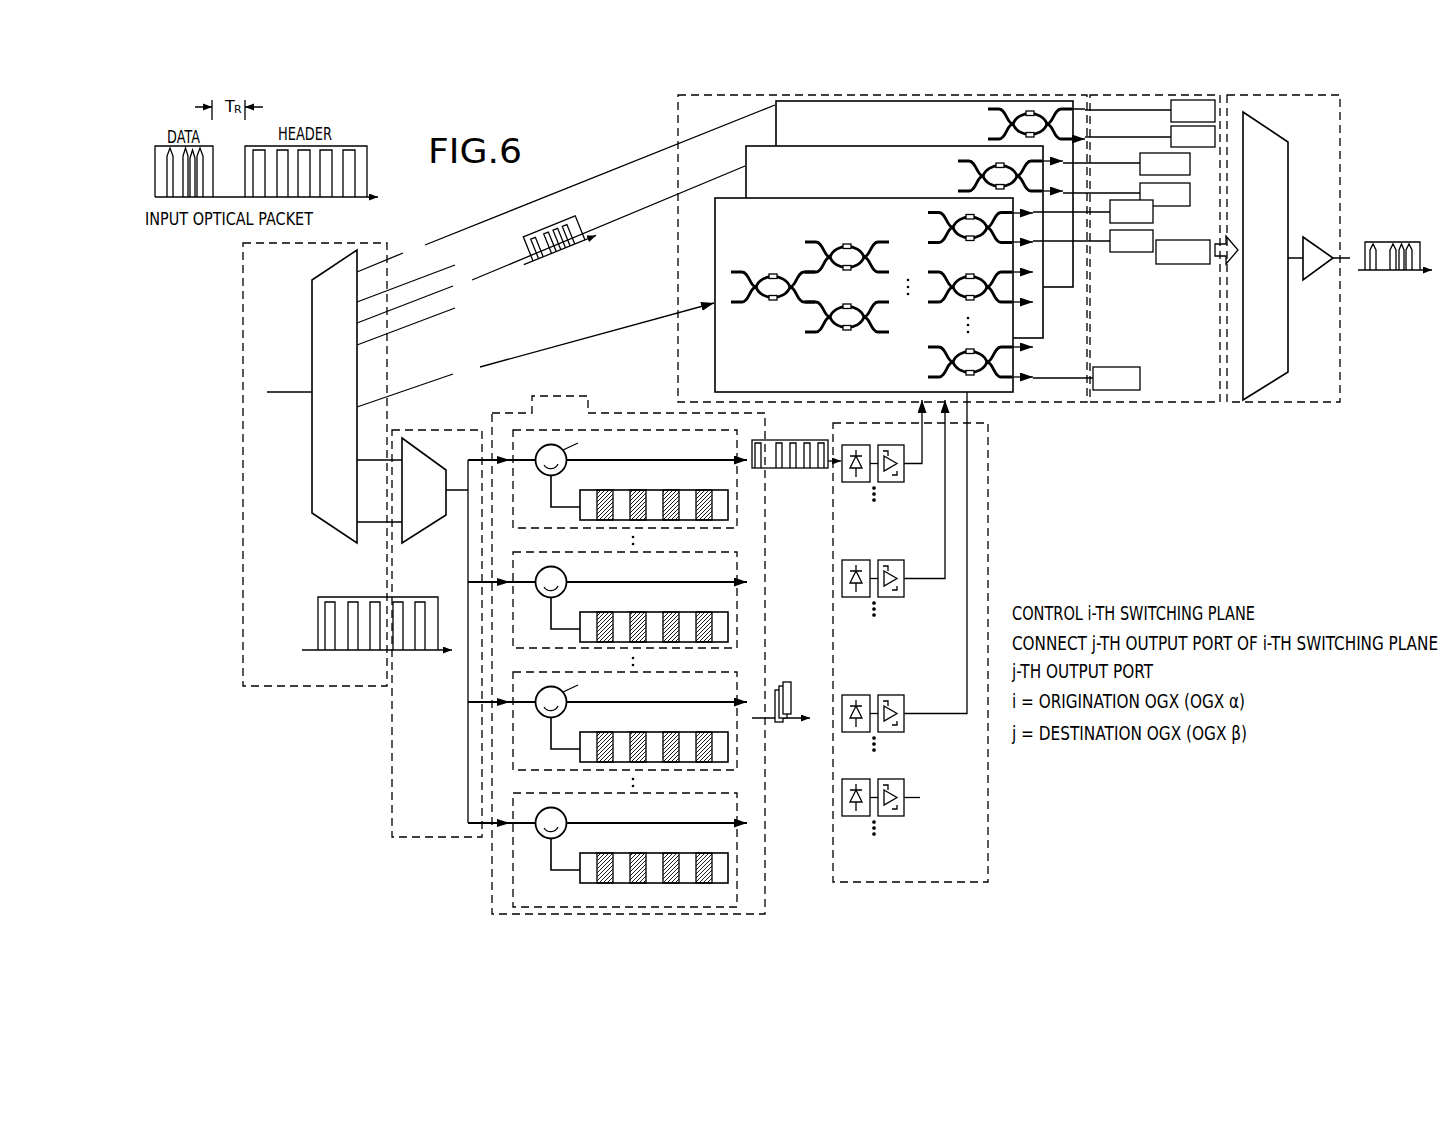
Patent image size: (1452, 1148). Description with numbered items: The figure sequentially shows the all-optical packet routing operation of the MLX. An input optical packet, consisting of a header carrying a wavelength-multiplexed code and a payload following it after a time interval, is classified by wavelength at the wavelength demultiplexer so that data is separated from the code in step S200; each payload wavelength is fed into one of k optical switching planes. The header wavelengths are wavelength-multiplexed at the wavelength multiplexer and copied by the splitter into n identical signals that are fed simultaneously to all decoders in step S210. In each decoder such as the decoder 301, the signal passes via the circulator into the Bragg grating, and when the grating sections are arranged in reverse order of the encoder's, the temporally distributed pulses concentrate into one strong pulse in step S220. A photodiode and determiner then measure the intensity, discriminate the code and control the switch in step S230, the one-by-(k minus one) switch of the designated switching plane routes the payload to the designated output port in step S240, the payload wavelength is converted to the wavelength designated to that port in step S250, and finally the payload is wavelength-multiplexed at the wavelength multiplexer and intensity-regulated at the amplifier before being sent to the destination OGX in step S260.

The decoder 301 is at (556, 430).
The step of separating data from code (header) S200 is at (480, 425).
The step of reproducing header S210 is at (411, 661).
The step of decoding header S220 is at (654, 670).
The step of determining intensity and controlling switch S230 is at (909, 664).
The switching step S240 is at (924, 236).
The step of converting input wavelength to designated wavelength S250 is at (1175, 261).
The step of wavelength-multiplexing and regulating intensity S260 is at (1327, 273).